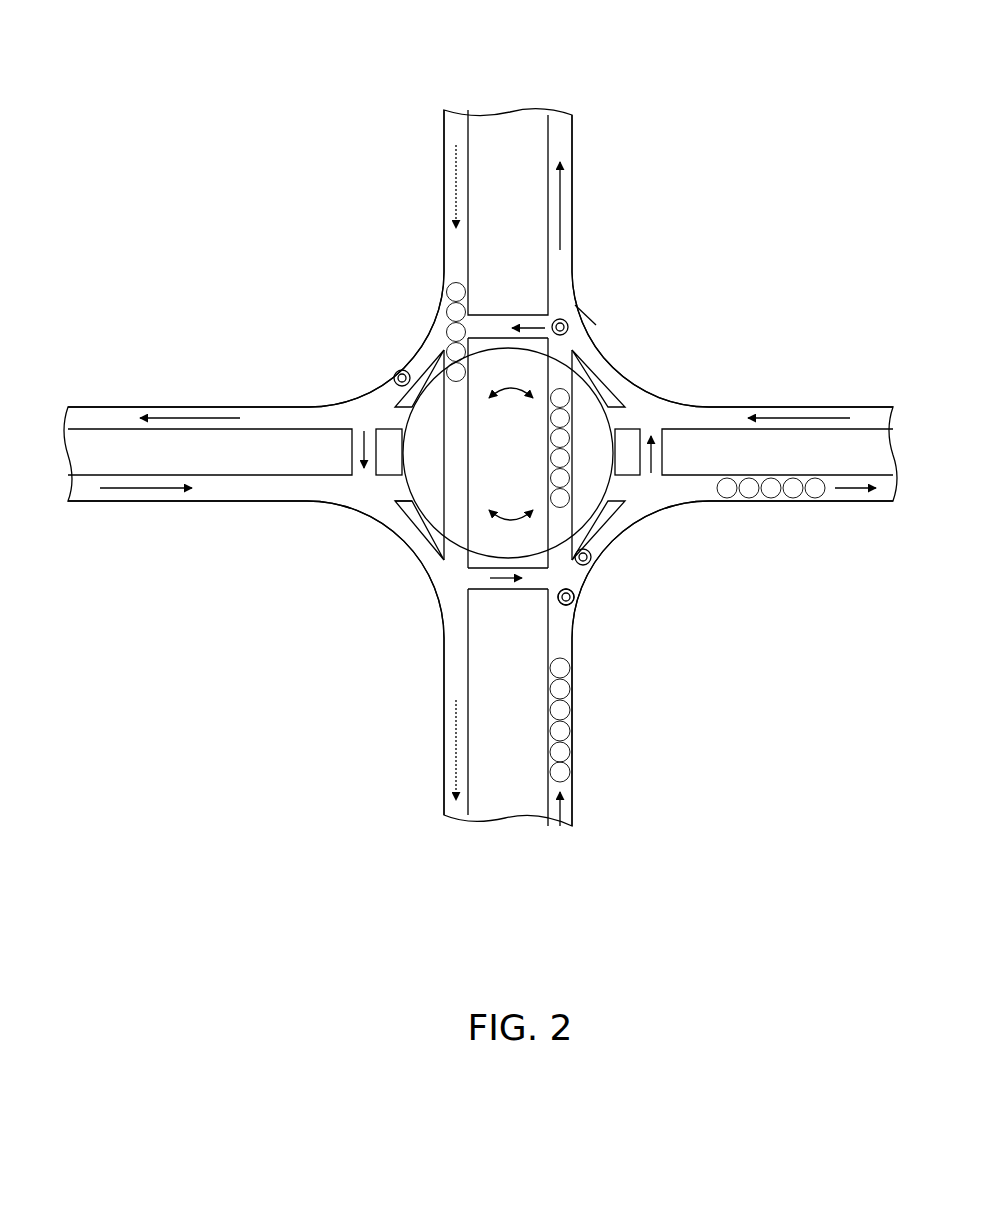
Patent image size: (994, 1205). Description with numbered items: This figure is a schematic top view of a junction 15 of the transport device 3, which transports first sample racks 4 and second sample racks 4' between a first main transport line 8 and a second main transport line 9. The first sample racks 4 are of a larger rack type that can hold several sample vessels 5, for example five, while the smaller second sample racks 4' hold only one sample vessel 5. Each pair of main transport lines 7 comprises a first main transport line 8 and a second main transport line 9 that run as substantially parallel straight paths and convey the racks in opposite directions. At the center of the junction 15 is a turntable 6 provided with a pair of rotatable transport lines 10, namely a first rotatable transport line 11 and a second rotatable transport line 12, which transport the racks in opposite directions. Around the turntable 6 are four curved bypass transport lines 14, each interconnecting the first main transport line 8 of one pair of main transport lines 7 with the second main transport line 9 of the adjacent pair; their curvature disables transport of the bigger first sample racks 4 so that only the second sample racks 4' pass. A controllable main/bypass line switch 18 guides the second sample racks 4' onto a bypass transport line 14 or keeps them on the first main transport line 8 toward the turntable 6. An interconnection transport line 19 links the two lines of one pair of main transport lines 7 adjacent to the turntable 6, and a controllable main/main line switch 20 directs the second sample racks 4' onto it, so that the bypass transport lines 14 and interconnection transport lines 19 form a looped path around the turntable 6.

The transport device 3 is at (156, 88).
The junction 15 is at (261, 206).
The first sample racks 4 is at (600, 535).
The second sample racks 4' is at (491, 455).
The sample vessels 5 is at (571, 599).
The turntable 6 is at (412, 503).
The pair of main transport lines 7 is at (439, 196).
The first main transport line 8 is at (574, 256).
The second main transport line 9 is at (443, 247).
The pair of rotatable transport lines 10 is at (441, 514).
The first rotatable transport line 11 is at (548, 472).
The second rotatable transport line 12 is at (447, 465).
The bypass transport line 14 is at (411, 353).
The controllable main/bypass line switch 18 is at (546, 601).
The interconnection transport line 19 is at (497, 316).
The controllable main/main line switch 20 is at (566, 324).